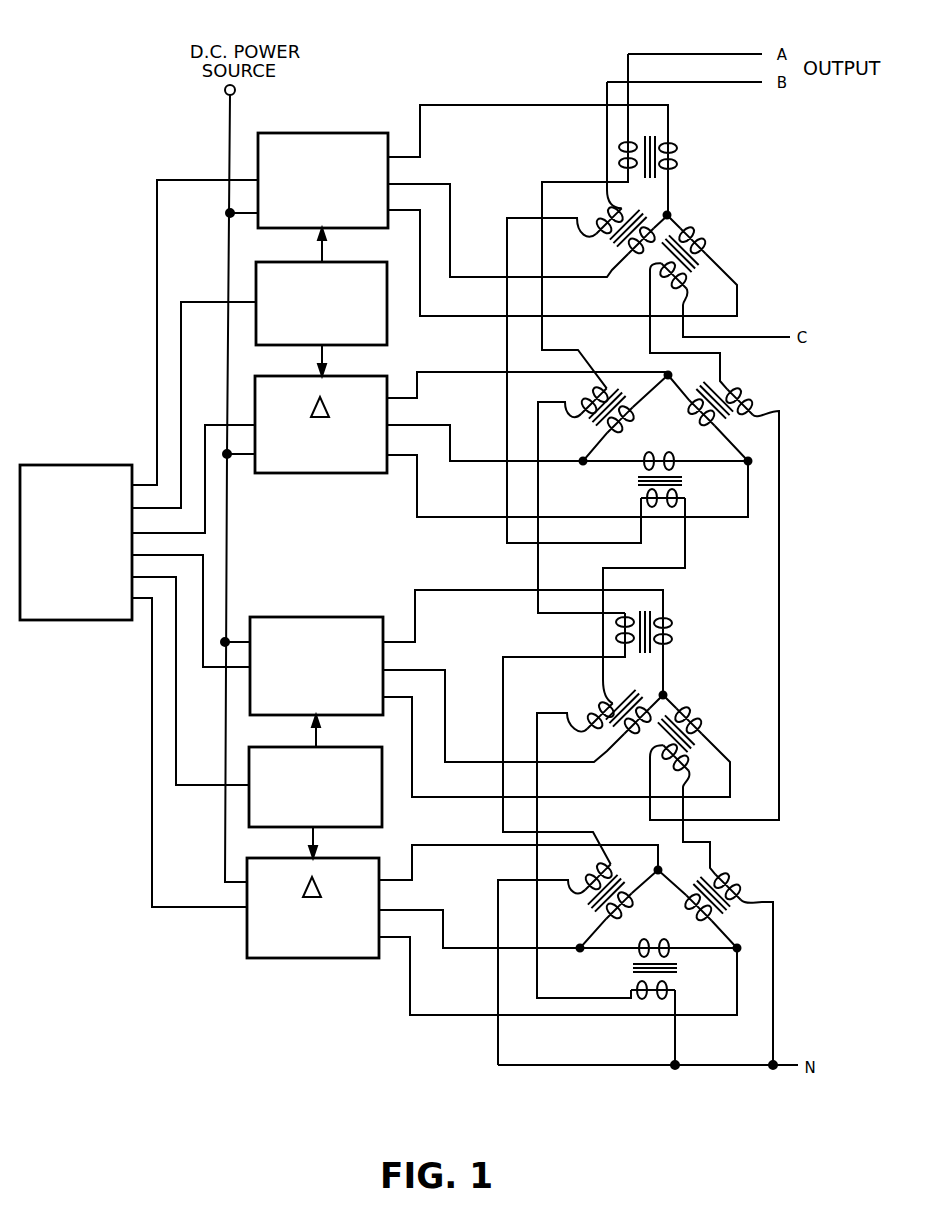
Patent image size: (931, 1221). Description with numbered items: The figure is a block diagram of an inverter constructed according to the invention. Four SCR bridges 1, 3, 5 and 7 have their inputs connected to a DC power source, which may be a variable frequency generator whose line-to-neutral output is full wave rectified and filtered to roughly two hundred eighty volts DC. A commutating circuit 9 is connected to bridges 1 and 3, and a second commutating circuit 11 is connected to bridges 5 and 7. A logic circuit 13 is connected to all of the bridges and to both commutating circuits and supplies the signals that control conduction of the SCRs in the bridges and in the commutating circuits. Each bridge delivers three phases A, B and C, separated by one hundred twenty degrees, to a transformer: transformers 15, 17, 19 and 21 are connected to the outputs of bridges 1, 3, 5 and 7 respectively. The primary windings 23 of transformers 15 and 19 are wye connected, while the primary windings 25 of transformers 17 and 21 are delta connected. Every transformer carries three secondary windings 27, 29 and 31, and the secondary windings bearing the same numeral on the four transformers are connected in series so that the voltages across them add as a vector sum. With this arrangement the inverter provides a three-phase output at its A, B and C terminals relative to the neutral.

The SCR bridge 1 is at (305, 131).
The SCR bridge 3 is at (305, 474).
The SCR bridge 5 is at (305, 617).
The SCR bridge 7 is at (300, 960).
The commutating circuit 9 is at (328, 337).
The commutating circuit 11 is at (305, 816).
The logic circuit 13 is at (86, 590).
The transformer 15 is at (735, 203).
The transformer 17 is at (785, 393).
The transformer 19 is at (715, 667).
The transformer 21 is at (768, 875).
The primary windings 23 is at (677, 162).
The primary windings 25 is at (663, 453).
The secondary winding 27 is at (626, 152).
The secondary winding 29 is at (670, 283).
The secondary winding 31 is at (613, 217).